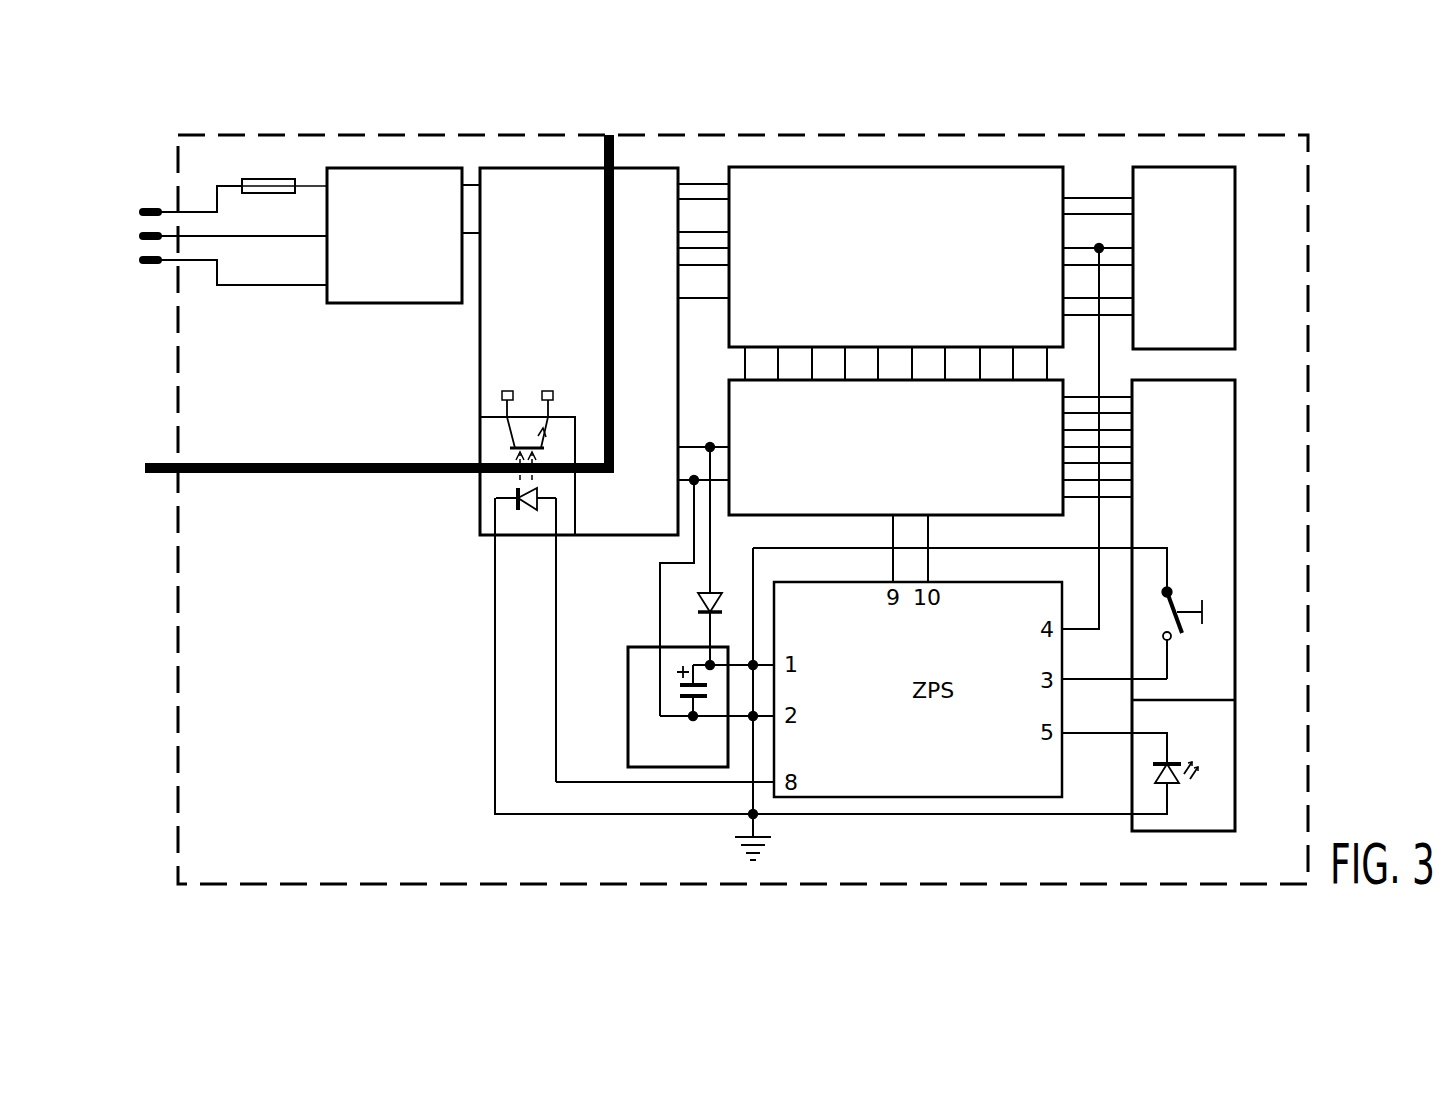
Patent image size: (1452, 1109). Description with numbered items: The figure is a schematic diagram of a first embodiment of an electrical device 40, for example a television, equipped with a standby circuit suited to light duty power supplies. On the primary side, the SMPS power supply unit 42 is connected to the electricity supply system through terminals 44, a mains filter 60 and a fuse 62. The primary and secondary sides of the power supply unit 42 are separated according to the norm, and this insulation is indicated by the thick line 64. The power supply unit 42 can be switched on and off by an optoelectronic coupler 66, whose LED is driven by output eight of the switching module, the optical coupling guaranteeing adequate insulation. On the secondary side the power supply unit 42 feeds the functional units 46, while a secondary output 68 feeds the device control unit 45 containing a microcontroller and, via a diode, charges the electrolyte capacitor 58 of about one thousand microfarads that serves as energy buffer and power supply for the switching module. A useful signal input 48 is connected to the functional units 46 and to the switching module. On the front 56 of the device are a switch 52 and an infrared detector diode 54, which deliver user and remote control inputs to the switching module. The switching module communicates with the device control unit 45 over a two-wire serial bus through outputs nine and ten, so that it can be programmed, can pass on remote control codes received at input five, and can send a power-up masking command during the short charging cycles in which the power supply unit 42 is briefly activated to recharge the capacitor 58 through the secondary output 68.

The electrical device 40 is at (504, 134).
The power supply unit 42 is at (558, 307).
The terminals 44 is at (140, 236).
The device control unit 45 is at (912, 449).
The functional units 46 is at (912, 272).
The useful signal input 48 is at (1200, 269).
The switch 52 is at (1183, 612).
The infrared detector diode 54 is at (1173, 780).
The front 56 is at (1202, 473).
The electrolyte capacitor 58 is at (680, 688).
The mains filter 60 is at (414, 250).
The fuse 62 is at (274, 179).
The thick line 64 is at (385, 463).
The optoelectronic coupler 66 is at (492, 488).
The secondary output 68 is at (678, 463).